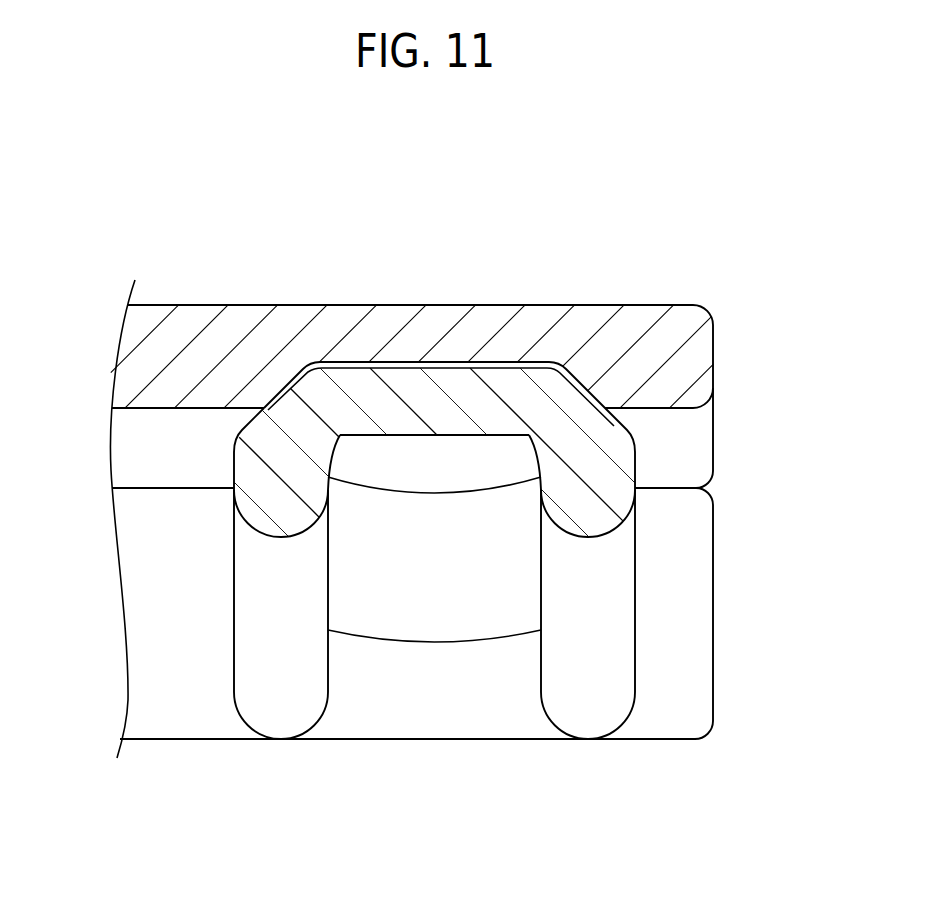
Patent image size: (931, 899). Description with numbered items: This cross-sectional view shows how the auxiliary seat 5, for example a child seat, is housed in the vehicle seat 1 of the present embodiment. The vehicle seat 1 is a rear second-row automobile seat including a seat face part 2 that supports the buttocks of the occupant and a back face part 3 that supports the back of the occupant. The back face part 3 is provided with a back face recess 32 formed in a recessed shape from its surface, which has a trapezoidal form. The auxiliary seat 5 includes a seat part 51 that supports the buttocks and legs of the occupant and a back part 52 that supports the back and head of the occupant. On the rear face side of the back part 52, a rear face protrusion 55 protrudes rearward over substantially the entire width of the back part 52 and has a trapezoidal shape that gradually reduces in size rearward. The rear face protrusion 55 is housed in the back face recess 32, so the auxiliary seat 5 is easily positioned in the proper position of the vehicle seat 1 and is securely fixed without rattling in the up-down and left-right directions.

The vehicle seat 1 is at (719, 208).
The seat face part 2 is at (713, 620).
The back face part 3 is at (713, 360).
The auxiliary seat 5 is at (186, 591).
The back face recess 32 is at (490, 368).
The seat part 51 is at (635, 655).
The back part 52 is at (635, 443).
The rear face protrusion 55 is at (343, 377).